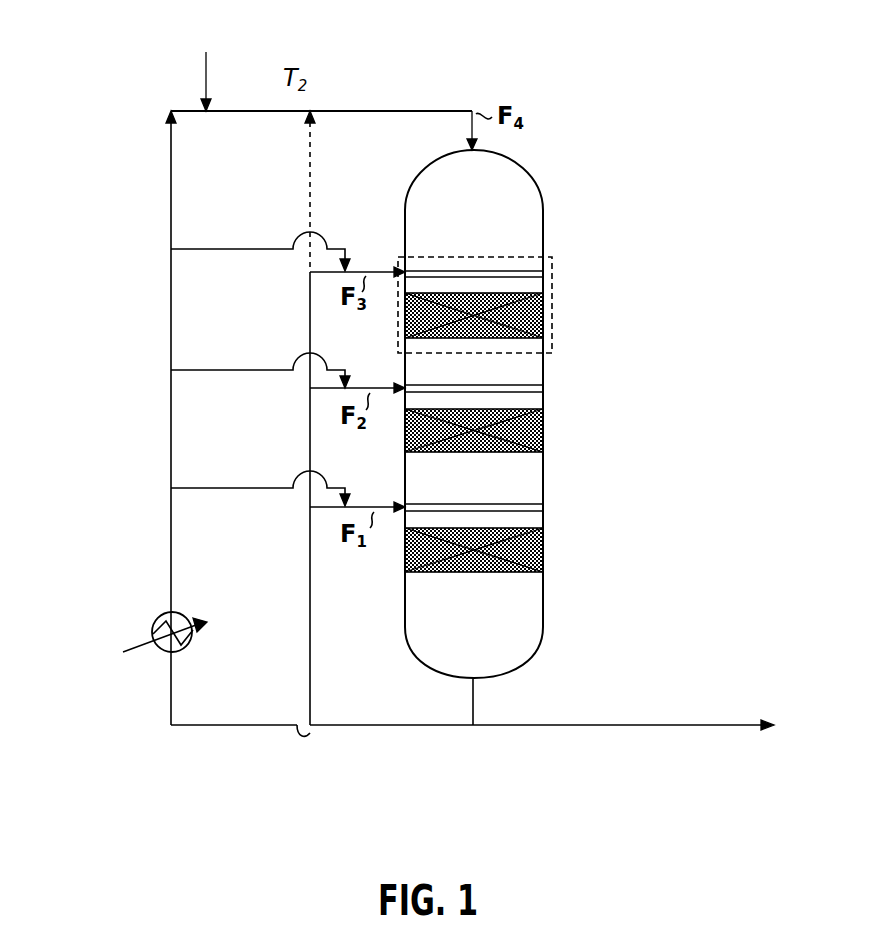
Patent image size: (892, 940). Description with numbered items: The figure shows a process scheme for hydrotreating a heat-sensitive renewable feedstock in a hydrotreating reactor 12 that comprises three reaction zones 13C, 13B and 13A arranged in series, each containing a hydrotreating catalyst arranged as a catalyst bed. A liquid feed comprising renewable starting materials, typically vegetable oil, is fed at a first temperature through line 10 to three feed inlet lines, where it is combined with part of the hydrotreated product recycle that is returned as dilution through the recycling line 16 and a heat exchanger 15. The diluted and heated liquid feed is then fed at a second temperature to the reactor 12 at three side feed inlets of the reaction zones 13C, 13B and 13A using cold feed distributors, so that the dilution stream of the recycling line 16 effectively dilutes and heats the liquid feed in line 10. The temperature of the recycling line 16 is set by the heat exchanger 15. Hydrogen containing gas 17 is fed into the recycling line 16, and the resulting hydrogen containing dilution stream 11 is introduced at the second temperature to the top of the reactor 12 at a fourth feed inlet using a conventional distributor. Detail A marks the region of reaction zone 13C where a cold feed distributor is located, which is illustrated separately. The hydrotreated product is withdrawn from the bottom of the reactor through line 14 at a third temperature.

The line 10 is at (310, 762).
The hydrogen containing dilution stream 11 is at (408, 111).
The hydrotreating reactor 12 is at (528, 172).
The reaction zone 13A is at (572, 537).
The reaction zone 13B is at (572, 422).
The reaction zone 13C is at (574, 307).
The line 14 is at (769, 720).
The heat exchanger 15 is at (165, 612).
The recycling line 16 is at (171, 249).
The hydrogen containing gas 17 is at (208, 72).
The detail A is at (552, 267).